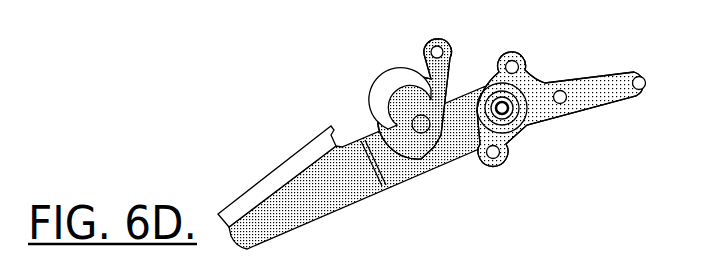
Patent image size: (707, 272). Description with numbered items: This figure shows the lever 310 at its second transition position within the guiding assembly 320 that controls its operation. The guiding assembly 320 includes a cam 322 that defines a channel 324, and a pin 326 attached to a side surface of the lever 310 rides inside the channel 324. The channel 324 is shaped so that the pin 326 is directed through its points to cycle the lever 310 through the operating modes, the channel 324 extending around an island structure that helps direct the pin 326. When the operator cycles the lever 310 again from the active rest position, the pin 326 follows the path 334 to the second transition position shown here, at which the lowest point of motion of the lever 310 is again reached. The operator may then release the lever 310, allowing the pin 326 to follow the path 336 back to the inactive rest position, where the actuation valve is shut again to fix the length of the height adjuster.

The lever 310 is at (248, 190).
The guiding assembly 320 is at (453, 53).
The cam 322 is at (429, 145).
The channel 324 is at (413, 88).
The pin 326 is at (434, 146).
The path 334 is at (423, 124).
The path 336 is at (433, 100).